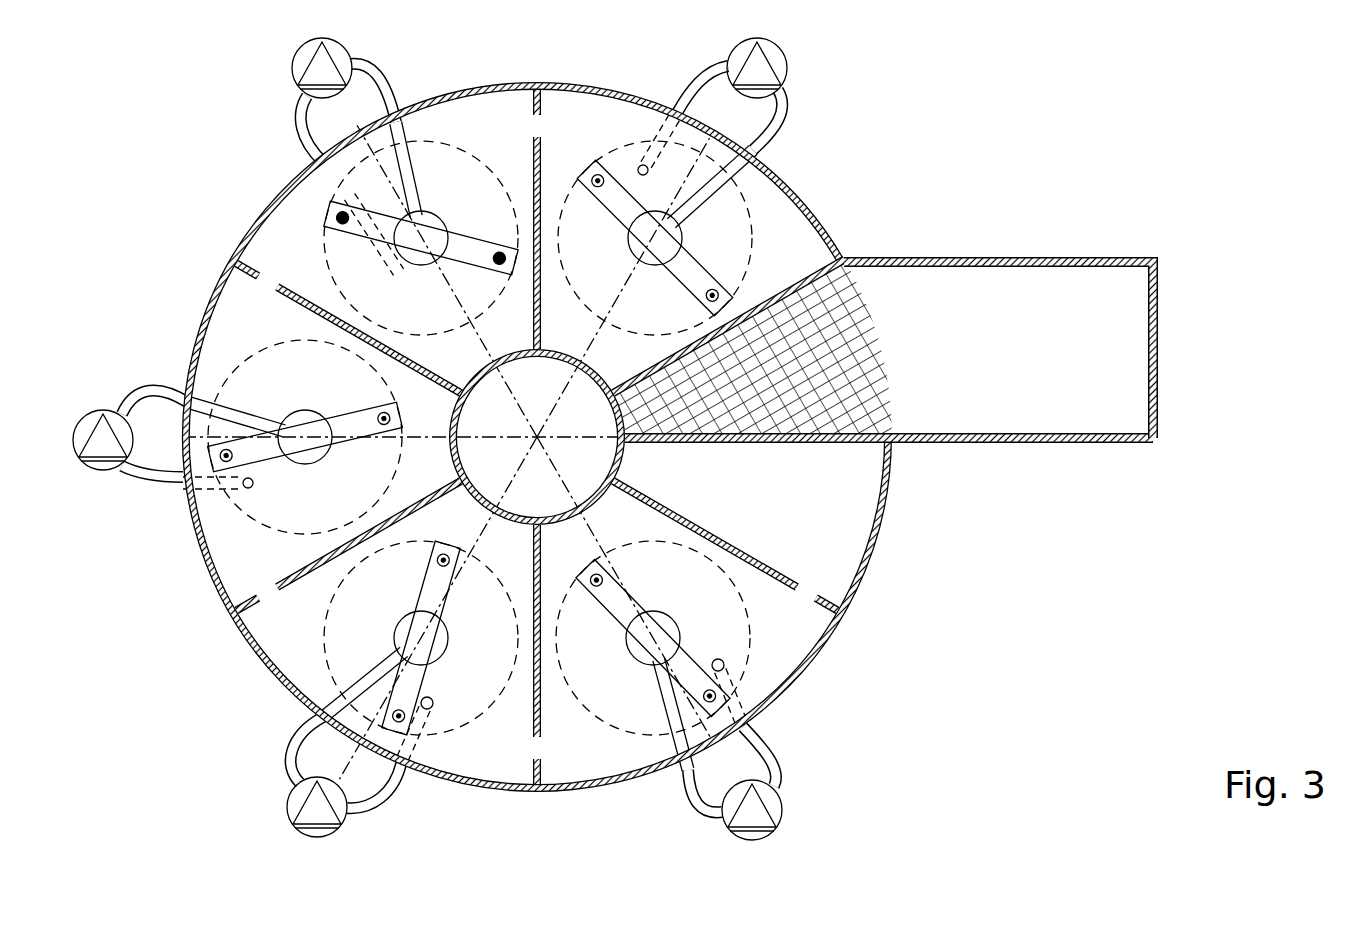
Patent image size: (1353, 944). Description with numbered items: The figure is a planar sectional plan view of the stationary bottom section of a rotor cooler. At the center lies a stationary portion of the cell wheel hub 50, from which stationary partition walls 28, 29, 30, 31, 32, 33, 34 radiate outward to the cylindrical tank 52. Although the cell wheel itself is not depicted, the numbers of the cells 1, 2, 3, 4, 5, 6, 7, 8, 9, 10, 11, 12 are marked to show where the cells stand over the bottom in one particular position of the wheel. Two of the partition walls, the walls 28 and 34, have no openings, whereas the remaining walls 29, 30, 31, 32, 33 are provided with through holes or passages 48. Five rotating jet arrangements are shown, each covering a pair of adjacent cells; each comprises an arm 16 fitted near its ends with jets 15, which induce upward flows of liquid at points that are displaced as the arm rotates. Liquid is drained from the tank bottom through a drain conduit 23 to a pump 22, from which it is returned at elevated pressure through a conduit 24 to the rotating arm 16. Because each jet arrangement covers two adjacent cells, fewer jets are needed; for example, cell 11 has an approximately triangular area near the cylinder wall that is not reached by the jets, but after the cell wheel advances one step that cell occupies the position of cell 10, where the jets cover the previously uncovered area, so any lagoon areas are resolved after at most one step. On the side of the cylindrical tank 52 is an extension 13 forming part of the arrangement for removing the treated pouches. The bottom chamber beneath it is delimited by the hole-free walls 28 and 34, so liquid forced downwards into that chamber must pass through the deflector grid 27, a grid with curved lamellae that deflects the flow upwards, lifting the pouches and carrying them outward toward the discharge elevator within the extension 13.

The cell 1 is at (639, 466).
The cell 2 is at (616, 516).
The cell 3 is at (566, 546).
The cell 4 is at (503, 547).
The cell 5 is at (454, 519).
The cell 6 is at (427, 461).
The cell 7 is at (427, 411).
The cell 8 is at (454, 359).
The cell 9 is at (503, 329).
The cell 10 is at (566, 326).
The cell 11 is at (614, 359).
The cell 12 is at (665, 404).
The extension 13 is at (1026, 359).
The jets 15 is at (336, 220).
The arm 16 is at (383, 236).
The pump 22 is at (293, 62).
The drain conduit 23 is at (303, 127).
The conduit 24 is at (380, 81).
The deflector grid 27 is at (873, 340).
The stationary partition wall 28 is at (889, 461).
The stationary partition wall 29 is at (740, 547).
The stationary partition wall 30 is at (543, 643).
The stationary partition wall 31 is at (362, 543).
The stationary partition wall 32 is at (343, 337).
The stationary partition wall 33 is at (535, 212).
The stationary partition wall 34 is at (790, 297).
The through holes or passages 48 is at (541, 130).
The cell wheel hub 50 is at (471, 427).
The cylindrical tank 52 is at (807, 207).